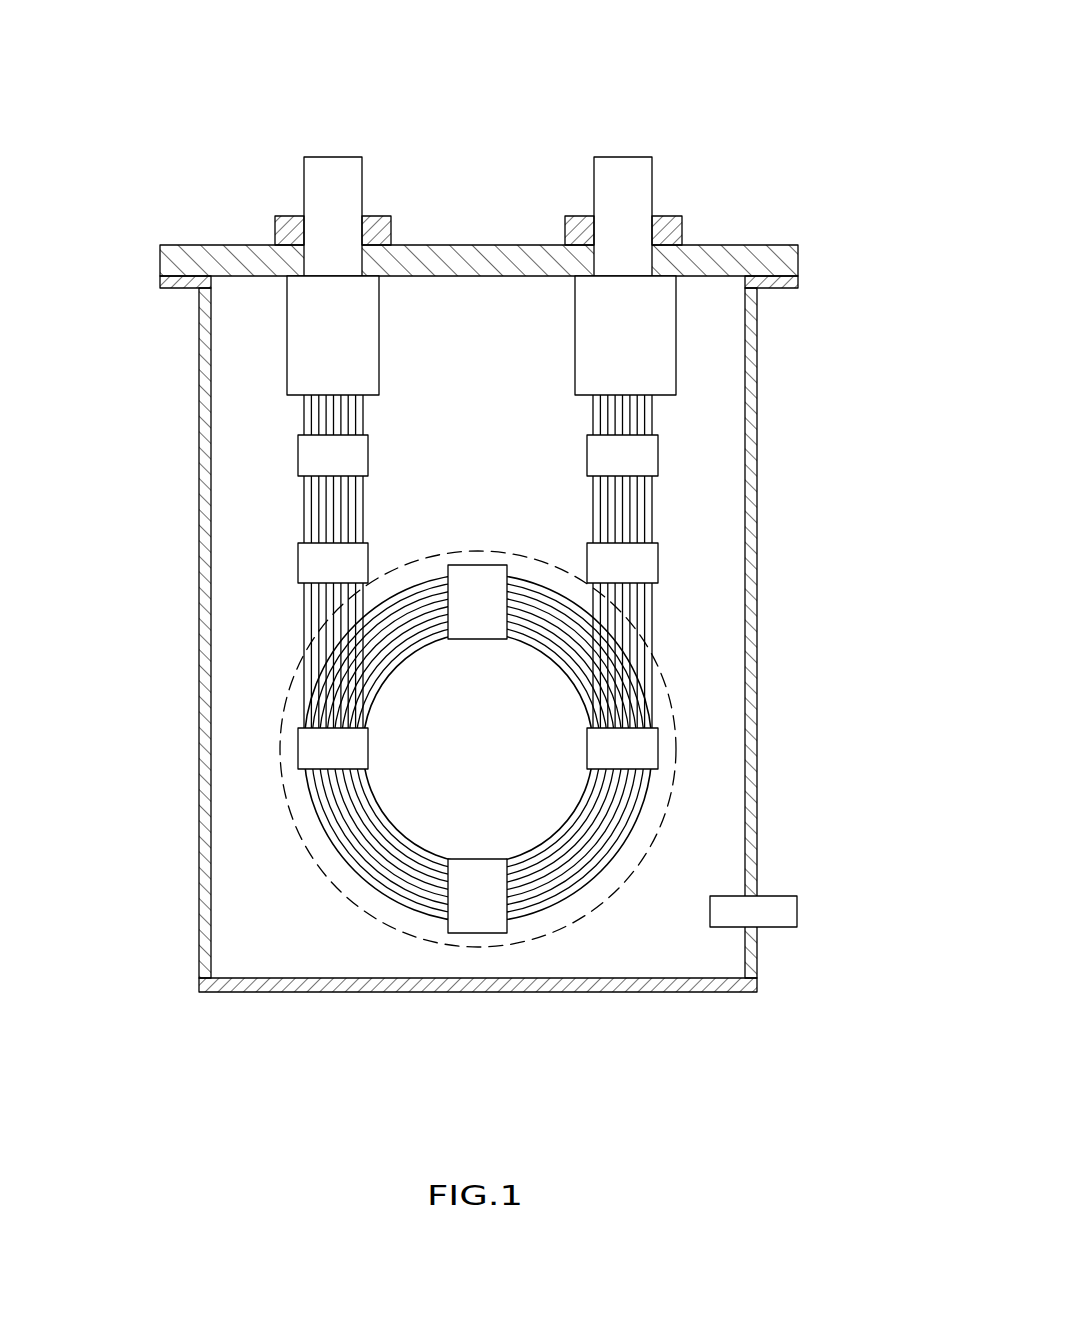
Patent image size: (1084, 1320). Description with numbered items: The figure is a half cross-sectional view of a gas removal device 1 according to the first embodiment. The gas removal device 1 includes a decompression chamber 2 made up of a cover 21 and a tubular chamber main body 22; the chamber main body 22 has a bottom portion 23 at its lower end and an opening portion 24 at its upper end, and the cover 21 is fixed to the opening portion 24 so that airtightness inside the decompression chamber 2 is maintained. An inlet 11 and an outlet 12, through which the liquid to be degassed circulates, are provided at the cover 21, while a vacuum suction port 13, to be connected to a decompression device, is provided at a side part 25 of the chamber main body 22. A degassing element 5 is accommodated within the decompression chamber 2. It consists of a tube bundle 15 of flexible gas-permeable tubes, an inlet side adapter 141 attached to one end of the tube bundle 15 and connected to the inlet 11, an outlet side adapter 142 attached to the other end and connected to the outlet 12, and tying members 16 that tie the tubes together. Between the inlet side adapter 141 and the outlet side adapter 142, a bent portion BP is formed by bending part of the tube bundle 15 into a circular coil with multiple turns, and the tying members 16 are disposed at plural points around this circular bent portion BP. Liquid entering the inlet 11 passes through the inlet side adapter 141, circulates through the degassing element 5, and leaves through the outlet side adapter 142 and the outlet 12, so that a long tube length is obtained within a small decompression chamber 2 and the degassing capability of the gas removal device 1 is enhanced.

The gas removal device 1 is at (515, 556).
The decompression chamber 2 is at (515, 667).
The degassing element 5 is at (488, 611).
The inlet 11 is at (332, 213).
The outlet 12 is at (652, 258).
The vacuum suction port 13 is at (745, 897).
The tube bundle 15 is at (652, 515).
The tying members 16 is at (478, 583).
The cover 21 is at (795, 266).
The chamber main body 22 is at (487, 682).
The bottom portion 23 is at (360, 992).
The opening portion 24 is at (167, 292).
The side part 25 is at (757, 662).
The inlet side adapter 141 is at (305, 352).
The outlet side adapter 142 is at (650, 364).
The bent portion BP is at (598, 905).